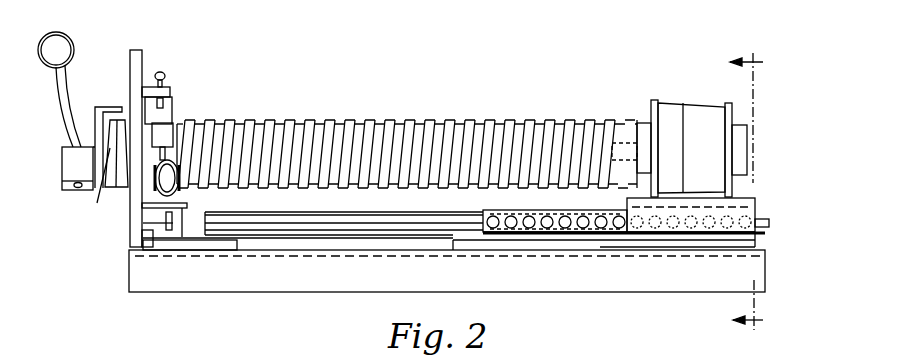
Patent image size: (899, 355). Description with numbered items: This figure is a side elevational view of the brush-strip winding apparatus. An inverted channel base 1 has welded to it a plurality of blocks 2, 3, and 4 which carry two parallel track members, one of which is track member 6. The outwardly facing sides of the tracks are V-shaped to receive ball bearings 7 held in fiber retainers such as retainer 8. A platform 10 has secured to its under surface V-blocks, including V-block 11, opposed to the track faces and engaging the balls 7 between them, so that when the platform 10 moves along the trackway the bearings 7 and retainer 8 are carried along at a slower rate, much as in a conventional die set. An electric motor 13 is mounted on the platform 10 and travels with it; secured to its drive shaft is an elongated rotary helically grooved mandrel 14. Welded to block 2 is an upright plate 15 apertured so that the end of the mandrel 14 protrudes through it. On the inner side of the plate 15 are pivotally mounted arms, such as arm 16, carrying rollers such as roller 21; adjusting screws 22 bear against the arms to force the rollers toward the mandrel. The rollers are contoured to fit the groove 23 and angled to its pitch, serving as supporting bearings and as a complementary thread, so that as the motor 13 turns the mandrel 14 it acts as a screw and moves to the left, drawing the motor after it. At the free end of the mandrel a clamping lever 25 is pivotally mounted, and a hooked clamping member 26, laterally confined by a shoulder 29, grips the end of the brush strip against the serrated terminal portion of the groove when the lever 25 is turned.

The inverted channel base 1 is at (295, 280).
The block 2 is at (222, 243).
The block 3 is at (505, 233).
The block 4 is at (778, 242).
The track member 6 is at (460, 211).
The ball bearings 7 is at (583, 228).
The fiber retainer 8 is at (500, 228).
The platform 10 is at (747, 205).
The V-block 11 is at (647, 235).
The electric motor 13 is at (672, 112).
The rotary helically grooved mandrel 14 is at (465, 119).
The upright plate 15 is at (139, 50).
The arm 16 is at (171, 113).
The roller 21 is at (179, 193).
The adjusting screws 22 is at (164, 73).
The groove 23 is at (412, 118).
The clamping lever 25 is at (72, 42).
The clamping member 26 is at (105, 107).
The shoulder 29 is at (95, 185).